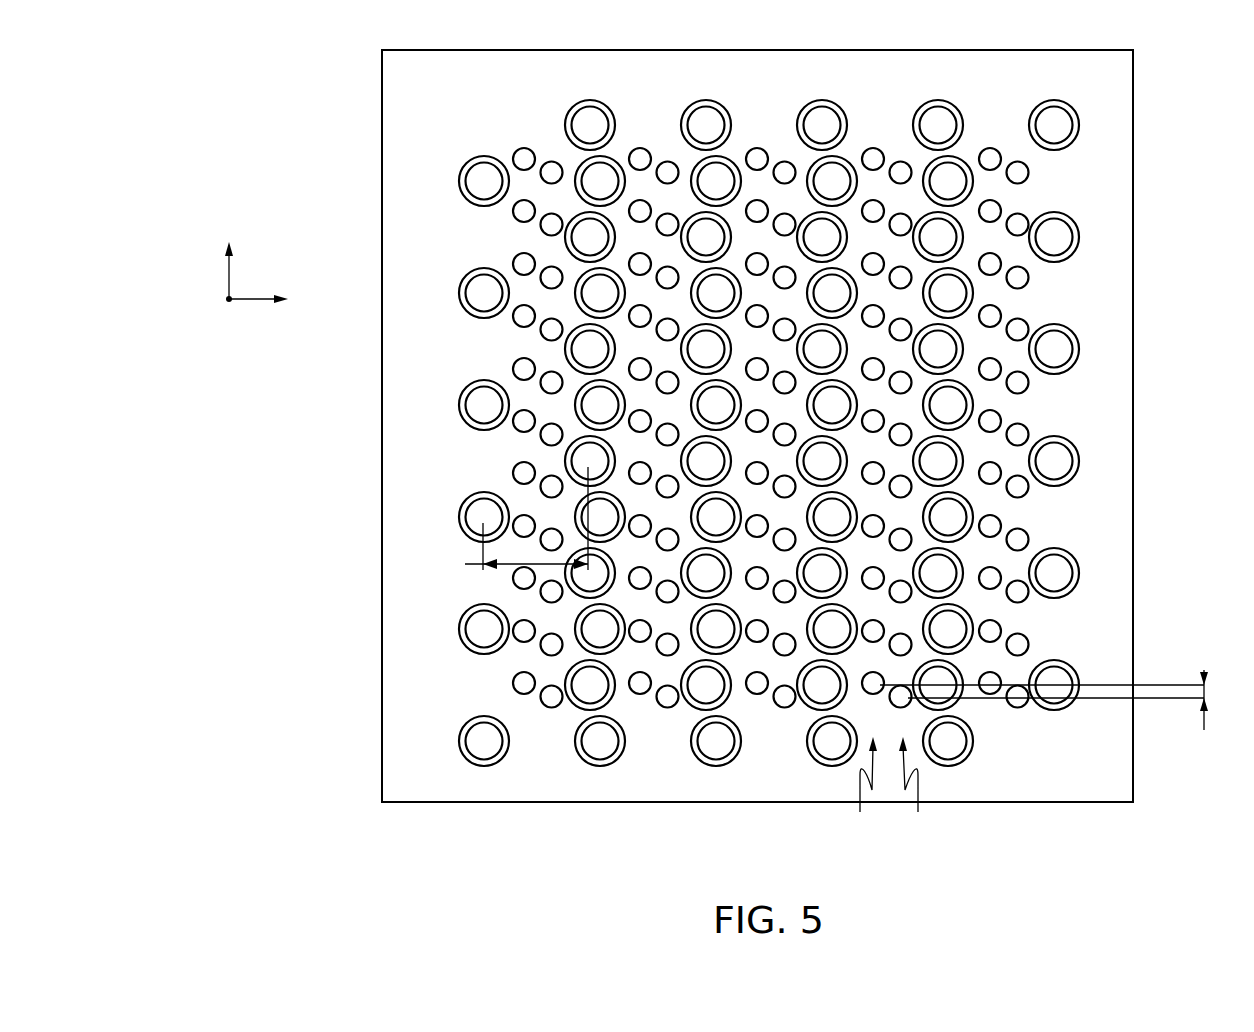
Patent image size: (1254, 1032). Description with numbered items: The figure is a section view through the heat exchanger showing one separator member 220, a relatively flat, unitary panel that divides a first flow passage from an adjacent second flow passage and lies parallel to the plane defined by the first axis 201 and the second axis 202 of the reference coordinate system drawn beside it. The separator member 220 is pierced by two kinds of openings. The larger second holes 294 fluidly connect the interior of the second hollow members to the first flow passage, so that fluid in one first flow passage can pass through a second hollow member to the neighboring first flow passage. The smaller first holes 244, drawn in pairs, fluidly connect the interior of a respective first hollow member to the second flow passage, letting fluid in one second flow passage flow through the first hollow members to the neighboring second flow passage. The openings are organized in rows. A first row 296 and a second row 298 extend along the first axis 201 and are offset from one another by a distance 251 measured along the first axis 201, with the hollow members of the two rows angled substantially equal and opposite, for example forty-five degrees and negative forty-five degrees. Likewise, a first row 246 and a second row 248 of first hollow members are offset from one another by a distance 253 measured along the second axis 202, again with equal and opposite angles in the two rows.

The separator member 220 is at (432, 72).
The first axis 201 is at (263, 297).
The second axis 202 is at (229, 279).
The second holes 294 is at (590, 113).
The first holes 244 is at (551, 161).
The second row 298 is at (540, 461).
The first row 296 is at (435, 522).
The distance 251 is at (506, 523).
The distance 253 is at (1208, 653).
The first row 246 is at (860, 790).
The second row 248 is at (917, 790).